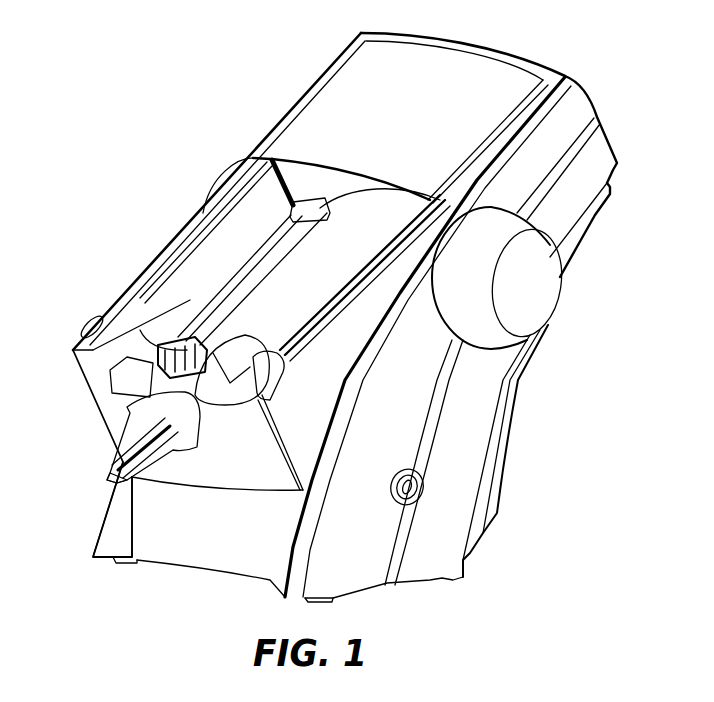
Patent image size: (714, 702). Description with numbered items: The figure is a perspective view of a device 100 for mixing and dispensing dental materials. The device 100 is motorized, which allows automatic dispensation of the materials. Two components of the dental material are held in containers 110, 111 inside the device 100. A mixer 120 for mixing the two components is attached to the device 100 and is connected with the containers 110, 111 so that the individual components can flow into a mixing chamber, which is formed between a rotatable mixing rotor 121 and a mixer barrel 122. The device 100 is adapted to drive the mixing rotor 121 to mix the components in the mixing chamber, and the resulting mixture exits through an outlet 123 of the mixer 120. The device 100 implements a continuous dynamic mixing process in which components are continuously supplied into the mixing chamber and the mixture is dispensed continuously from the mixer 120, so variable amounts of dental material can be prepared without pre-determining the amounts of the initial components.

The device 100 is at (318, 317).
The container 110 is at (187, 323).
The container 111 is at (277, 283).
The mixer 120 is at (123, 457).
The mixing rotor 121 is at (133, 420).
The mixer barrel 122 is at (132, 477).
The outlet 123 is at (113, 477).